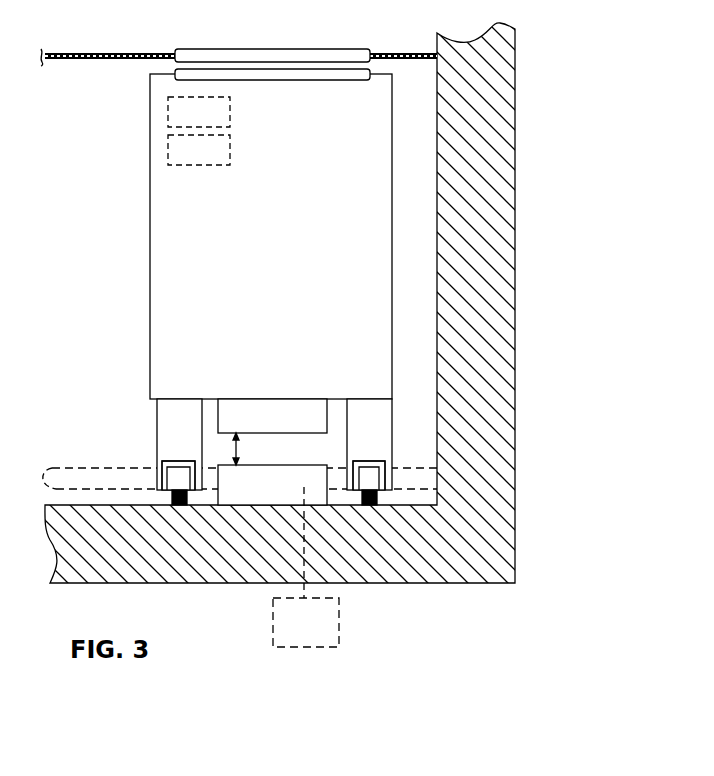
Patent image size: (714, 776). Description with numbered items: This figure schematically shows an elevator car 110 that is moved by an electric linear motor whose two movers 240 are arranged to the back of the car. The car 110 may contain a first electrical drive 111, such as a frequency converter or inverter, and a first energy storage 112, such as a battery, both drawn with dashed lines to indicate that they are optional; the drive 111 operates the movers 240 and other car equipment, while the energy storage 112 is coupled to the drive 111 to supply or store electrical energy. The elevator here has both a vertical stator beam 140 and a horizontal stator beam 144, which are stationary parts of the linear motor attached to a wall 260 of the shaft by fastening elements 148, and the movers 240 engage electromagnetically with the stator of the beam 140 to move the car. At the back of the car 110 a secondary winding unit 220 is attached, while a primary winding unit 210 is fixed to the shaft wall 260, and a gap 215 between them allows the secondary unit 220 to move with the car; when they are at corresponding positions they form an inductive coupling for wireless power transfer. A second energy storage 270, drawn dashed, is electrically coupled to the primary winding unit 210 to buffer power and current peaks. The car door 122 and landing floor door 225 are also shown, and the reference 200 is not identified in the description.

The elevator car 110 is at (271, 236).
The first electrical drive 111 is at (199, 112).
The first energy storage 112 is at (199, 150).
The door 122 is at (272, 51).
The vertical stator beam 140 is at (177, 480).
The horizontal stator beam 144 is at (102, 480).
The fastening elements 148 is at (377, 497).
The mounting stand 200 is at (269, 414).
The primary winding unit 210 is at (272, 485).
The gap 215 is at (240, 447).
The secondary winding unit 220 is at (272, 416).
The door 225 is at (335, 78).
The mover 240 is at (177, 430).
The wall 260 is at (513, 213).
The second energy storage 270 is at (306, 567).